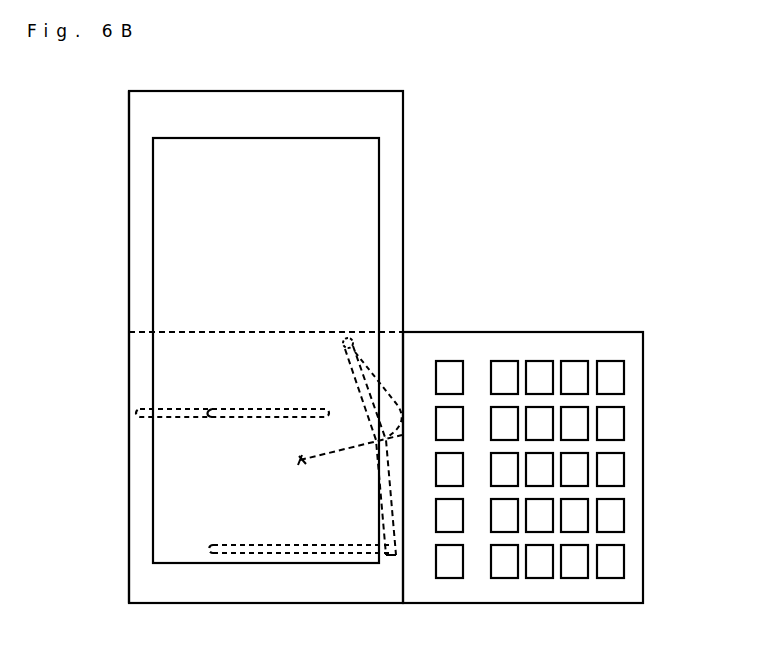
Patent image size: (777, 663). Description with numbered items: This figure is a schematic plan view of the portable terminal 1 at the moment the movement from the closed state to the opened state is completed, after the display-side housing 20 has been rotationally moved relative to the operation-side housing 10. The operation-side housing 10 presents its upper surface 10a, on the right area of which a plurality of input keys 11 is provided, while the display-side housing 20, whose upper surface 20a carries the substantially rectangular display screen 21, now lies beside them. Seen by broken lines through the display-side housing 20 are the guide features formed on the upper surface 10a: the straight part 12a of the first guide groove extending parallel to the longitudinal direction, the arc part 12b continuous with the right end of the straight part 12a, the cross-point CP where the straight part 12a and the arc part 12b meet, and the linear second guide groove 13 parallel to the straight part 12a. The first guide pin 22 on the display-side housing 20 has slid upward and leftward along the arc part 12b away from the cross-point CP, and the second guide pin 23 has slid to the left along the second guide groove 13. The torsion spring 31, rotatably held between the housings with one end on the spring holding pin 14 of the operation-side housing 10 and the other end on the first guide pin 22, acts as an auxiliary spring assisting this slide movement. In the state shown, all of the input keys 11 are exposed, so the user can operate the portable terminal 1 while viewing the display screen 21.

The portable terminal 1 is at (572, 152).
The operation-side housing 10 is at (645, 438).
The upper surface of the operation-side housing 10a is at (639, 336).
The input keys 11 is at (543, 372).
The straight part of the first guide groove 12a is at (208, 548).
The arc part of the first guide groove 12b is at (358, 382).
The second guide groove 13 is at (140, 413).
The spring holding pin 14 is at (300, 460).
The display-side housing 20 is at (130, 318).
The upper surface of the display-side housing 20a is at (130, 136).
The display screen 21 is at (162, 245).
The first guide pin 22 is at (353, 343).
The second guide pin 23 is at (214, 410).
The torsion spring 31 is at (402, 412).
The cross-point CP is at (397, 555).